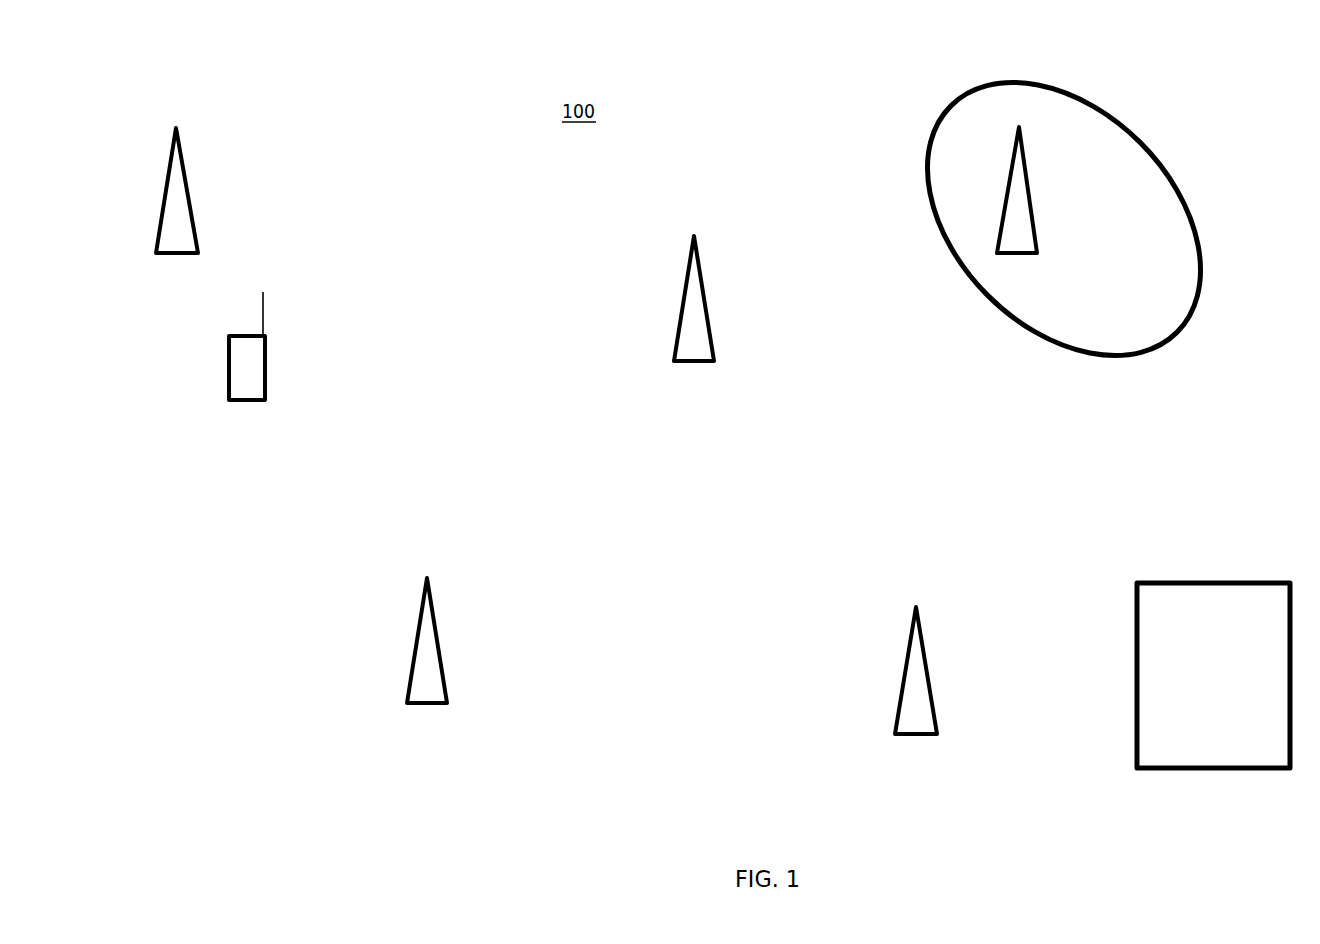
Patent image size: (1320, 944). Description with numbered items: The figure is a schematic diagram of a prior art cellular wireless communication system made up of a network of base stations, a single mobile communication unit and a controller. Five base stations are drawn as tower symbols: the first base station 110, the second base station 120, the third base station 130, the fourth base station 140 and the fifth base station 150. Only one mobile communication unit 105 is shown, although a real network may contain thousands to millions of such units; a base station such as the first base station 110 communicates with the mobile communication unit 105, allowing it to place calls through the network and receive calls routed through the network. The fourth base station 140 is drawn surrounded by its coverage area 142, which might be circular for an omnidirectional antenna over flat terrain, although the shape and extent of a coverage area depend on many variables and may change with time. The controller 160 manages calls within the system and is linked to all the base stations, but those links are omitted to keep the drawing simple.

The mobile communication unit 105 is at (265, 368).
The base station BS1 110 is at (193, 190).
The base station BS2 120 is at (438, 618).
The base station BS3 130 is at (682, 290).
The base station BS4 140 is at (998, 178).
The coverage area 142 is at (1177, 178).
The base station BS5 150 is at (905, 655).
The controller 160 is at (1137, 652).